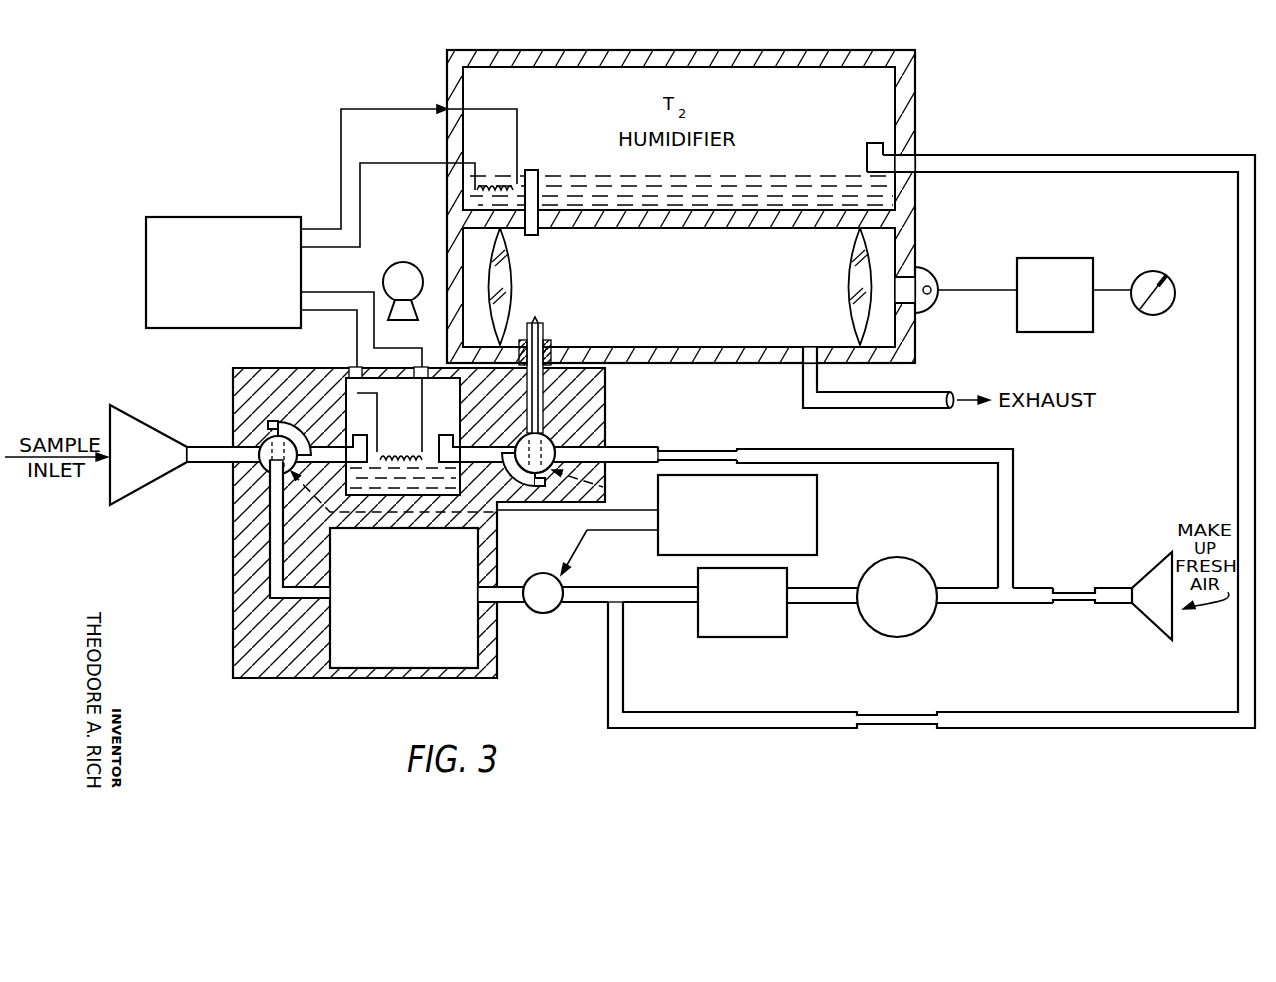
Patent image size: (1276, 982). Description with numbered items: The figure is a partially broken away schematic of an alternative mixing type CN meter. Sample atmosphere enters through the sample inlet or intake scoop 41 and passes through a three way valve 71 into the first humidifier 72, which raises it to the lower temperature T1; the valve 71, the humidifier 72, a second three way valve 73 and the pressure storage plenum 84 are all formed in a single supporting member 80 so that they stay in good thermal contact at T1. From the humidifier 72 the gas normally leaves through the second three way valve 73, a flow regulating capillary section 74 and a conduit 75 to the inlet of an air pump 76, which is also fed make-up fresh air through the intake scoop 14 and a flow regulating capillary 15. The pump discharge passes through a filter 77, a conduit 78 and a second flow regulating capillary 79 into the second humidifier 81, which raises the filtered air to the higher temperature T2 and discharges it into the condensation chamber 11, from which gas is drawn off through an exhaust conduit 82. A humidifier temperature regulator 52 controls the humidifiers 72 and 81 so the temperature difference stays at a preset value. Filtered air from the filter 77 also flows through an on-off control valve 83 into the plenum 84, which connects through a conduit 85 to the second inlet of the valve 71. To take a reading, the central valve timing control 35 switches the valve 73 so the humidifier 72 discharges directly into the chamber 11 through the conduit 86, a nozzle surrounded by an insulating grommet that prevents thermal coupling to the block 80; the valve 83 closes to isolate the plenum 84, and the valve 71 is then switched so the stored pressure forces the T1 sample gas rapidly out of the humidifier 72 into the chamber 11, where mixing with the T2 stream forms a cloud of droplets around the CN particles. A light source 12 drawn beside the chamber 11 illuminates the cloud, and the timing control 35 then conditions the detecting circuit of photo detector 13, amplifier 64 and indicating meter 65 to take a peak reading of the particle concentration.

The condensation chamber 11 is at (671, 228).
The lamp 12 is at (397, 264).
The photo detector 13 is at (947, 276).
The intake scoop 14 is at (1149, 624).
The flow regulating capillary 15 is at (1073, 592).
The central valve timing control 35 is at (818, 527).
The sample inlet or intake scoop 41 is at (122, 505).
The humidifier temperature regulator 52 is at (146, 319).
The amplifier 64 is at (1060, 258).
The indicating meter 65 is at (1160, 276).
The three way valve 71 is at (262, 471).
The first humidifier 72 is at (409, 420).
The second three way valve 73 is at (556, 447).
The flow regulating capillary section 74 is at (698, 451).
The conduit 75 is at (1014, 498).
The air pump 76 is at (945, 540).
The filter 77 is at (755, 638).
The conduit 78 is at (1238, 345).
The second flow regulating capillary 79 is at (882, 715).
The single supporting member 80 is at (233, 389).
The second humidifier 81 is at (727, 50).
The exhaust conduit 82 is at (880, 409).
The on-off control valve 83 is at (548, 614).
The pressure storage vessel or plenum 84 is at (417, 669).
The conduit 85 is at (270, 566).
The conduit 86 is at (545, 340).